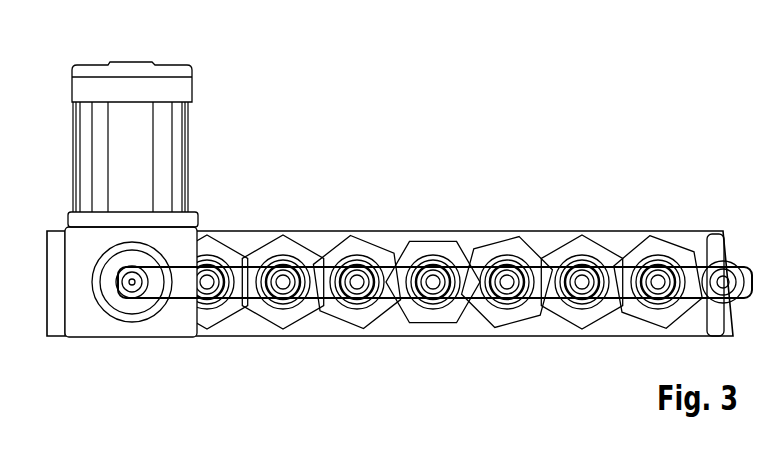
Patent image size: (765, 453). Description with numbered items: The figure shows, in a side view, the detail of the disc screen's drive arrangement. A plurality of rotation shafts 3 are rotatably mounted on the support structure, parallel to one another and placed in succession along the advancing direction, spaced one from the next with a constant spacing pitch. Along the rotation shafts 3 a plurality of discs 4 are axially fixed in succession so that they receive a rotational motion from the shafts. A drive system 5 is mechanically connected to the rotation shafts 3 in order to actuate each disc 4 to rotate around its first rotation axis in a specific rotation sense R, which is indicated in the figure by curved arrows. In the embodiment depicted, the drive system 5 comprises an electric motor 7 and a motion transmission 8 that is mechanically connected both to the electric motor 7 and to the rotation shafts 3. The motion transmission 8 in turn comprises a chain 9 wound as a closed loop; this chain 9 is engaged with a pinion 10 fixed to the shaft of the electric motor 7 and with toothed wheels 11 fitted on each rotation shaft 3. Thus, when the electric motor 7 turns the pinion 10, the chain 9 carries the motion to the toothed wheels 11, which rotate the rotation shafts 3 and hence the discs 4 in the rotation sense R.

The rotation shafts 3 is at (283, 282).
The discs 4 is at (390, 213).
The drive system 5 is at (167, 119).
The electric motor 7 is at (135, 180).
The motion transmission 8 is at (182, 332).
The chain 9 is at (708, 237).
The pinion 10 is at (130, 284).
The toothed wheels 11 is at (398, 303).
The rotation sense R is at (556, 211).